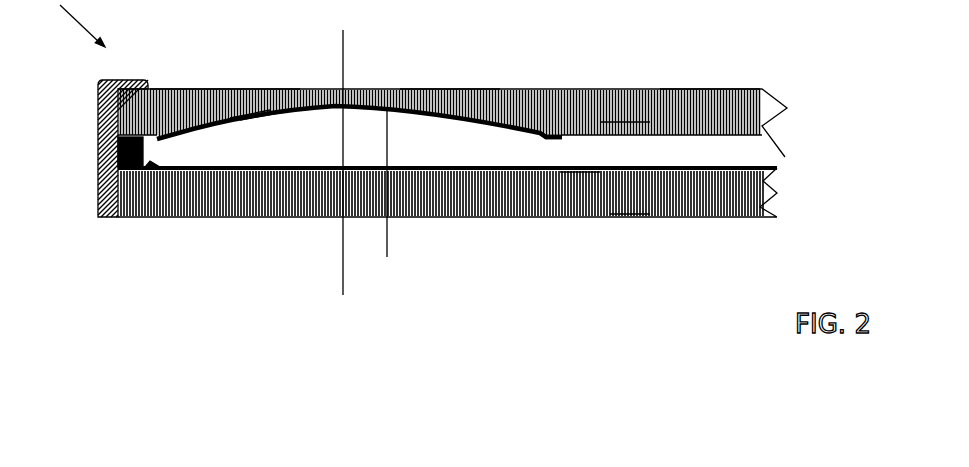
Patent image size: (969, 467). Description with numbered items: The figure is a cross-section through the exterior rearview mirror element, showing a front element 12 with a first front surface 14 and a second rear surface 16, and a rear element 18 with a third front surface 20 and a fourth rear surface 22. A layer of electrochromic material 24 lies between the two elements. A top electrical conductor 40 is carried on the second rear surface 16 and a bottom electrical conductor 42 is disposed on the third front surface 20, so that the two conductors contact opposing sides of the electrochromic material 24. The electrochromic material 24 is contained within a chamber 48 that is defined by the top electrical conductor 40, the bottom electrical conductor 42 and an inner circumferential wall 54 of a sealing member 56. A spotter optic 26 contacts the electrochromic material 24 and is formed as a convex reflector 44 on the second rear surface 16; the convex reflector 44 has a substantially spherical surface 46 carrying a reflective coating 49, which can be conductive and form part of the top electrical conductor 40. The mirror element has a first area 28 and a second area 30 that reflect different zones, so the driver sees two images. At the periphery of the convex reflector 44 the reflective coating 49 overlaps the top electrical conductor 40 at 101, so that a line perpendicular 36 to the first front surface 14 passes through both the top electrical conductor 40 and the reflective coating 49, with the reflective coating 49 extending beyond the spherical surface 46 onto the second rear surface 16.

The front element 12 is at (574, 80).
The first front surface 14 is at (440, 88).
The second rear surface 16 is at (740, 135).
The rear element 18 is at (457, 227).
The third front surface 20 is at (468, 165).
The fourth rear surface 22 is at (627, 215).
The electrochromic material 24 is at (770, 158).
The spotter optic 26 is at (266, 136).
The first area 28 is at (705, 80).
The second area 30 is at (216, 80).
The perpendicular line 36 is at (343, 60).
The top electrical conductor 40 is at (624, 113).
The bottom electrical conductor 42 is at (577, 172).
The convex reflector 44 is at (288, 96).
The substantially spherical surface 46 is at (249, 110).
The chamber 48 is at (642, 157).
The reflective coating 49 is at (393, 195).
The inner circumferential wall 54 is at (143, 150).
The sealing member 56 is at (153, 168).
The overlap 101 is at (551, 118).